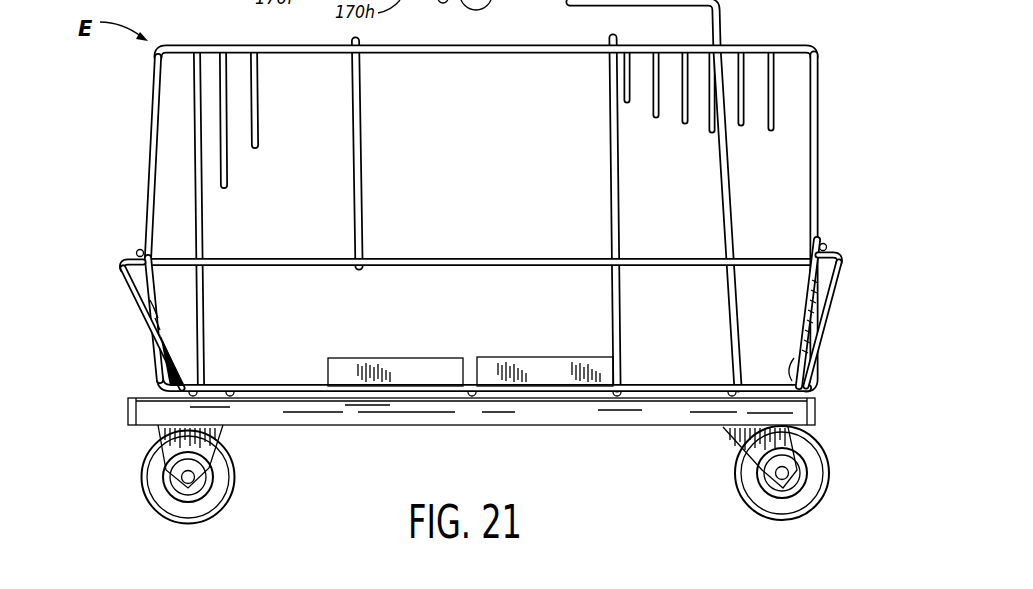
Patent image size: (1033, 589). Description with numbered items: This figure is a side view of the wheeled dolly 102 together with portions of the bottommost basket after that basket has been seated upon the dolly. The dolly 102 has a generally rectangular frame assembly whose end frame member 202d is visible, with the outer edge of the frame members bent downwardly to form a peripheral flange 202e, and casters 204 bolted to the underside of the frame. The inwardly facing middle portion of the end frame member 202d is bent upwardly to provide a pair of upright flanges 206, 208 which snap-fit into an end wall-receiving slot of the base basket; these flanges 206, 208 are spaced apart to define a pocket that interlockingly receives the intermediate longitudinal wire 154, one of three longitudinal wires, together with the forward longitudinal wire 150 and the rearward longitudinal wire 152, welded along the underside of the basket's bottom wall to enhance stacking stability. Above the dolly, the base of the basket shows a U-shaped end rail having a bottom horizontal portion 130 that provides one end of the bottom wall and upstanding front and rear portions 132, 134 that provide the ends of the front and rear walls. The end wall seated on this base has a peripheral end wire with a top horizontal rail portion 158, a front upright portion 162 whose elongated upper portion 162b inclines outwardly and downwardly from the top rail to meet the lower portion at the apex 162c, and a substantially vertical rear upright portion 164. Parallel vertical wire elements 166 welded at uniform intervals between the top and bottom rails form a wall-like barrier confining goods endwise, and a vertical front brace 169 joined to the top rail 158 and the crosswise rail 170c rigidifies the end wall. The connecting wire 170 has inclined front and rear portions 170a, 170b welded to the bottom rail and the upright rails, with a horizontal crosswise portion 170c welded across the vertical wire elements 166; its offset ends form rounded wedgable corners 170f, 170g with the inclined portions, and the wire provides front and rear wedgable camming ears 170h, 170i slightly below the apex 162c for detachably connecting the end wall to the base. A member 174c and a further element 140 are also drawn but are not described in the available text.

The wheeled dolly 102 is at (465, 465).
The bottom horizontal portion 130 is at (250, 385).
The upstanding front portion 132 is at (147, 297).
The upstanding rear portion 134 is at (805, 293).
The center vertical post 140 is at (620, 222).
The forward longitudinal wire 150 is at (232, 401).
The rearward longitudinal wire 152 is at (732, 395).
The intermediate longitudinal wire 154 is at (473, 393).
The top horizontal rail portion 158 is at (760, 42).
The front upright portion 162 is at (114, 218).
The elongated upper portion 162b is at (150, 147).
The apex 162c is at (145, 245).
The rear upright portion 164 is at (818, 138).
The vertical wire elements 166 is at (203, 228).
The vertical front brace 169 is at (362, 182).
The connecting wire 170 is at (822, 311).
The inclined front portion 170a is at (173, 371).
The inclined rear portion 170b is at (790, 373).
The horizontal crosswise portion 170c is at (415, 258).
The rounded wedgable corner 170f is at (125, 264).
The rounded wedgable corner 170g is at (840, 262).
The front wedgable camming ear 170h is at (128, 288).
The rear wedgable camming ear 170i is at (838, 278).
The handle support bar 174c is at (731, 200).
The end frame member 202d is at (603, 426).
The peripheral flange 202e is at (128, 410).
The casters 204 is at (220, 508).
The front upright flange 206 is at (402, 358).
The upright flange 208 is at (522, 357).